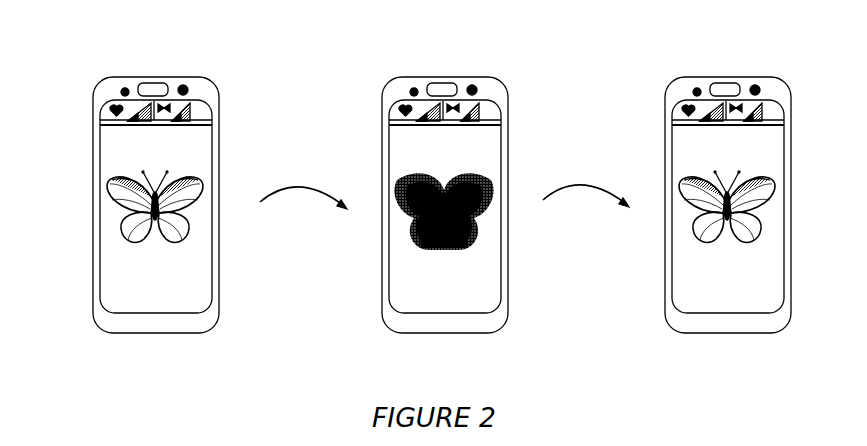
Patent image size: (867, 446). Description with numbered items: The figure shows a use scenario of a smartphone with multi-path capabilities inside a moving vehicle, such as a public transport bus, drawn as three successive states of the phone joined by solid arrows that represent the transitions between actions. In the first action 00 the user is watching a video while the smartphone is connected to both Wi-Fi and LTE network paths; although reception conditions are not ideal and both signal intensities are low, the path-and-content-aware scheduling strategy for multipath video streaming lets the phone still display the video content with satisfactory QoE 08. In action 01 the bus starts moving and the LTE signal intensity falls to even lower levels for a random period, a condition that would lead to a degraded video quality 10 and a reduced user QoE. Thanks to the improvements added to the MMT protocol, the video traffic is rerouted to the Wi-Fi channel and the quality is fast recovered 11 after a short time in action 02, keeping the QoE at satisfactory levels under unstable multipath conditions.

The first action 00 is at (88, 247).
The second action 01 is at (377, 254).
The third action 02 is at (661, 254).
The video content with satisfactory QoE 08 is at (205, 290).
The degraded video quality 10 is at (494, 290).
The recovered video quality 11 is at (778, 289).